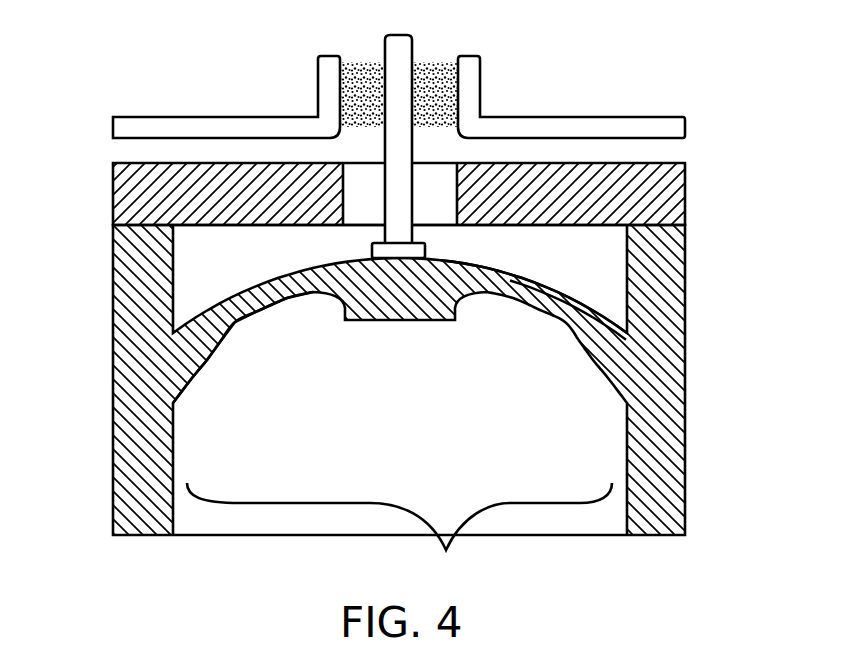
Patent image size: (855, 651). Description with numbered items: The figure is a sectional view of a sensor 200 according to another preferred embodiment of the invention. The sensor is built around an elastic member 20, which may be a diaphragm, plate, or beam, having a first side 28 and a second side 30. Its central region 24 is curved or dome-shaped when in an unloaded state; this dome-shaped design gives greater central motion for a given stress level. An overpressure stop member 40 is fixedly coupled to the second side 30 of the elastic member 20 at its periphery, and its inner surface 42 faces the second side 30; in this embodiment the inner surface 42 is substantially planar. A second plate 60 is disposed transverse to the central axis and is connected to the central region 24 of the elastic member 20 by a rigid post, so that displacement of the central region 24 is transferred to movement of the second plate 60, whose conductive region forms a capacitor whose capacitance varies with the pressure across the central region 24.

The sensor 200 is at (618, 48).
The second plate 60 is at (120, 124).
The overpressure stop member 40 is at (135, 188).
The inner surface 42 is at (554, 227).
The elastic member 20 is at (550, 318).
The second side 30 is at (583, 306).
The first side 28 is at (232, 327).
The central region 24 is at (399, 532).